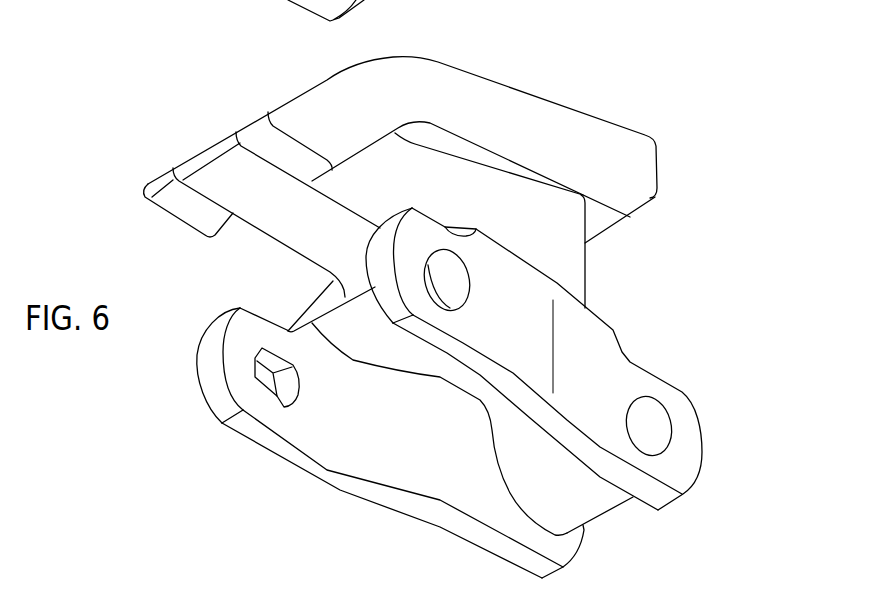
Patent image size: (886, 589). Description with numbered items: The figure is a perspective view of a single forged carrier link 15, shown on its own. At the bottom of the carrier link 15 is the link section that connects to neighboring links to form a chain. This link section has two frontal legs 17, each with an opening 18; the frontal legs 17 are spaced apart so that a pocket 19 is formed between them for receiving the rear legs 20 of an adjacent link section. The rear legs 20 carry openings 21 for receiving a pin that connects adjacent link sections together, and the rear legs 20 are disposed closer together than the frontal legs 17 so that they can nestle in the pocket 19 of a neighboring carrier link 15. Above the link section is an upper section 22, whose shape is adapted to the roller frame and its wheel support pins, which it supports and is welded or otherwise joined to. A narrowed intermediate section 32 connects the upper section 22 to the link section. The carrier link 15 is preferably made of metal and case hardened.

The forged carrier link 15 is at (608, 72).
The frontal legs 17 is at (275, 442).
The opening 18 is at (263, 360).
The pocket 19 is at (367, 427).
The rear legs 20 is at (648, 443).
The openings 21 is at (690, 473).
The upper section 22 is at (510, 103).
The narrowed intermediate section 32 is at (558, 238).